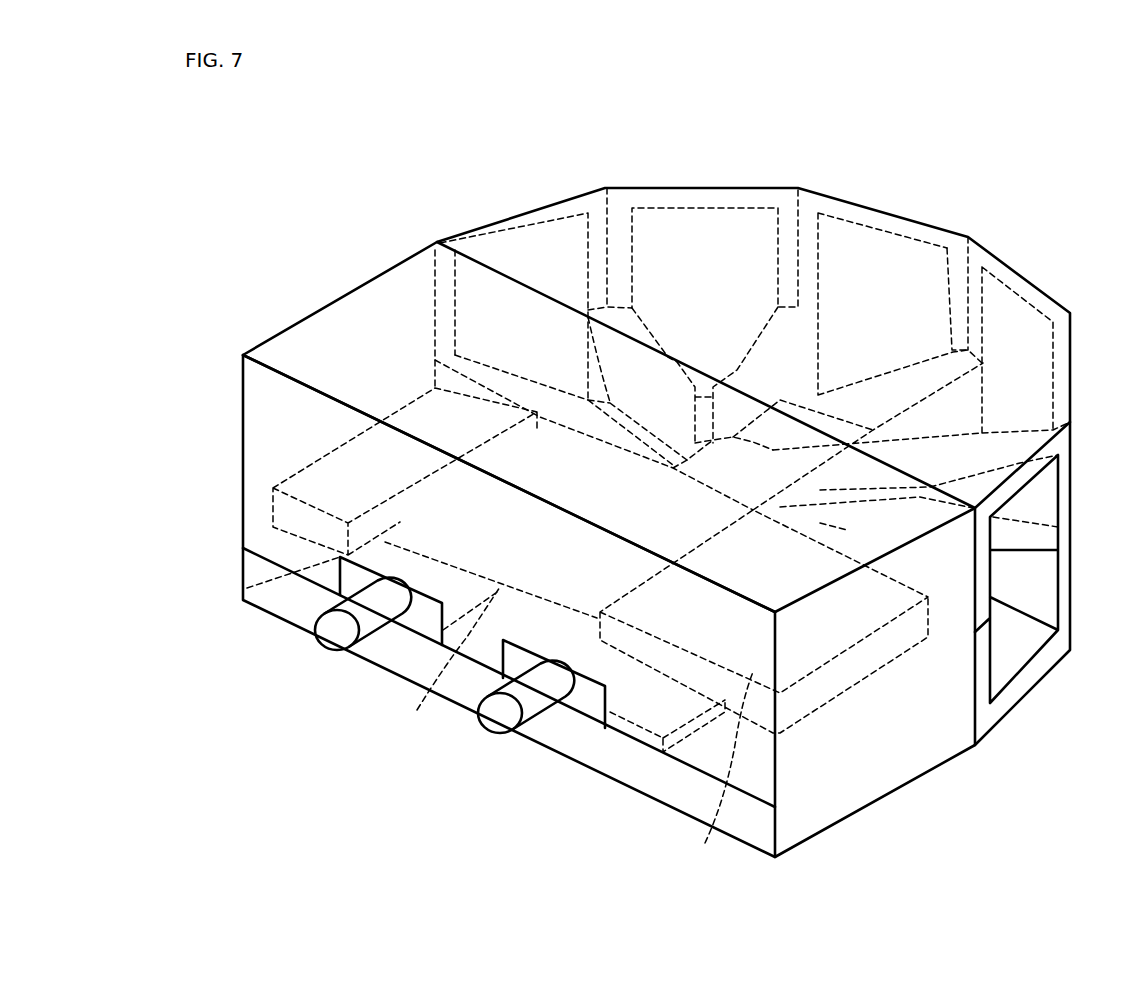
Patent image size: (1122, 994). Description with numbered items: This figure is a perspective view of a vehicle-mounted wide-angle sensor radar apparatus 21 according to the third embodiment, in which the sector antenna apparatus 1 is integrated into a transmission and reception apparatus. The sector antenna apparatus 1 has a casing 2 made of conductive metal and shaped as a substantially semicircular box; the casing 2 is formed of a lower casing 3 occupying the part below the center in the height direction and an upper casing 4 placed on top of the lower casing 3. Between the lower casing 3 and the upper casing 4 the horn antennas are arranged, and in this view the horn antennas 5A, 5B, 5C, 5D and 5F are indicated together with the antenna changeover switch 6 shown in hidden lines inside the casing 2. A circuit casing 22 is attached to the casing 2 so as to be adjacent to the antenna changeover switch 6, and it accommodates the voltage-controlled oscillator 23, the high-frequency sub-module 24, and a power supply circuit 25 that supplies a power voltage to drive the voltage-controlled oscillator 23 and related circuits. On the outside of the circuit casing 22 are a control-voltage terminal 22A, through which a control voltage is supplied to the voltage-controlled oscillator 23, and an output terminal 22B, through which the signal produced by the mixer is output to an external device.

The sector antenna apparatus 1 is at (655, 183).
The casing 2 is at (487, 232).
The lower casing 3 is at (1065, 582).
The upper casing 4 is at (868, 218).
The horn antenna 5A is at (588, 250).
The horn antenna 5B is at (775, 223).
The horn antenna 5C is at (947, 253).
The horn antenna 5D is at (1053, 323).
The horn antenna 5F is at (1023, 648).
The antenna changeover switch 6 is at (765, 488).
The wide-angle sensor radar apparatus 21 is at (321, 265).
The circuit casing 22 is at (283, 350).
The control-voltage terminal 22A is at (335, 633).
The output terminal 22B is at (500, 717).
The voltage-controlled oscillator 23 is at (283, 478).
The high-frequency sub-module 24 is at (448, 666).
The power supply circuit 25 is at (712, 768).